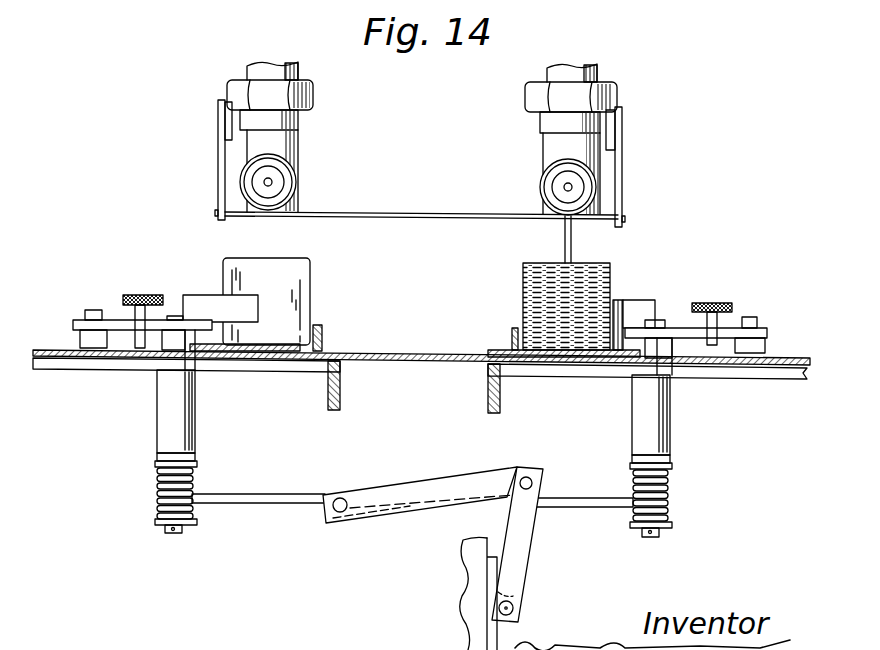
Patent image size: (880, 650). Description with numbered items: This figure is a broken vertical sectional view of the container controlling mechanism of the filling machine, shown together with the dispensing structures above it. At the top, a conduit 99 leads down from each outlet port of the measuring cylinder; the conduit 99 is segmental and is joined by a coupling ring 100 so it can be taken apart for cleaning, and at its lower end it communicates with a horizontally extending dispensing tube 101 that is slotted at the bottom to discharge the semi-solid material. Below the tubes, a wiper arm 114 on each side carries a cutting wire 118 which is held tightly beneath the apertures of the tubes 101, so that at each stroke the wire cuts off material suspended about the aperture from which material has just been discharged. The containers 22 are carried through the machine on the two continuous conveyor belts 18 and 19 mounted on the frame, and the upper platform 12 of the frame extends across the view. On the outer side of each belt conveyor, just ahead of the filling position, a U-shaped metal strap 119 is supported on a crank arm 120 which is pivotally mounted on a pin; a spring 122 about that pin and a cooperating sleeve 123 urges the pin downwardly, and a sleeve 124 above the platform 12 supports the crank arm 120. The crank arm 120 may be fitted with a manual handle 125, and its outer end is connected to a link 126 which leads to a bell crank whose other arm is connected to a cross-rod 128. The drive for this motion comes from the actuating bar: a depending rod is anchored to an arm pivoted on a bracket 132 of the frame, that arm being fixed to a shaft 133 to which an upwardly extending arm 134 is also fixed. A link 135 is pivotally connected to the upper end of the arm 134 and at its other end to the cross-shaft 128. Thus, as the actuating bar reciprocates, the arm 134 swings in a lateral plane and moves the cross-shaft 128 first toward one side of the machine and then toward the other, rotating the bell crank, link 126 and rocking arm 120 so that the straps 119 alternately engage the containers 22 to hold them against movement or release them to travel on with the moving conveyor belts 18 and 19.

The upper platform 12 is at (410, 353).
The conveyor belt 18 is at (272, 352).
The conveyor belt 19 is at (571, 358).
The container 22 is at (312, 282).
The conduit 99 is at (286, 141).
The coupling ring 100 is at (305, 94).
The dispensing tube 101 is at (297, 182).
The wiper arm 114 is at (218, 165).
The cutting wire 118 is at (385, 213).
The U-shaped metal strap 119 is at (238, 302).
The crank arm 120 is at (120, 322).
The spring 122 is at (190, 477).
The sleeve 123 is at (193, 412).
The sleeve 124 is at (662, 348).
The manual handle 125 is at (145, 295).
The link 126 is at (80, 338).
The cross-rod 128 is at (262, 500).
The bracket 132 is at (491, 633).
The shaft 133 is at (513, 609).
The upwardly extending arm 134 is at (520, 538).
The link 135 is at (430, 490).